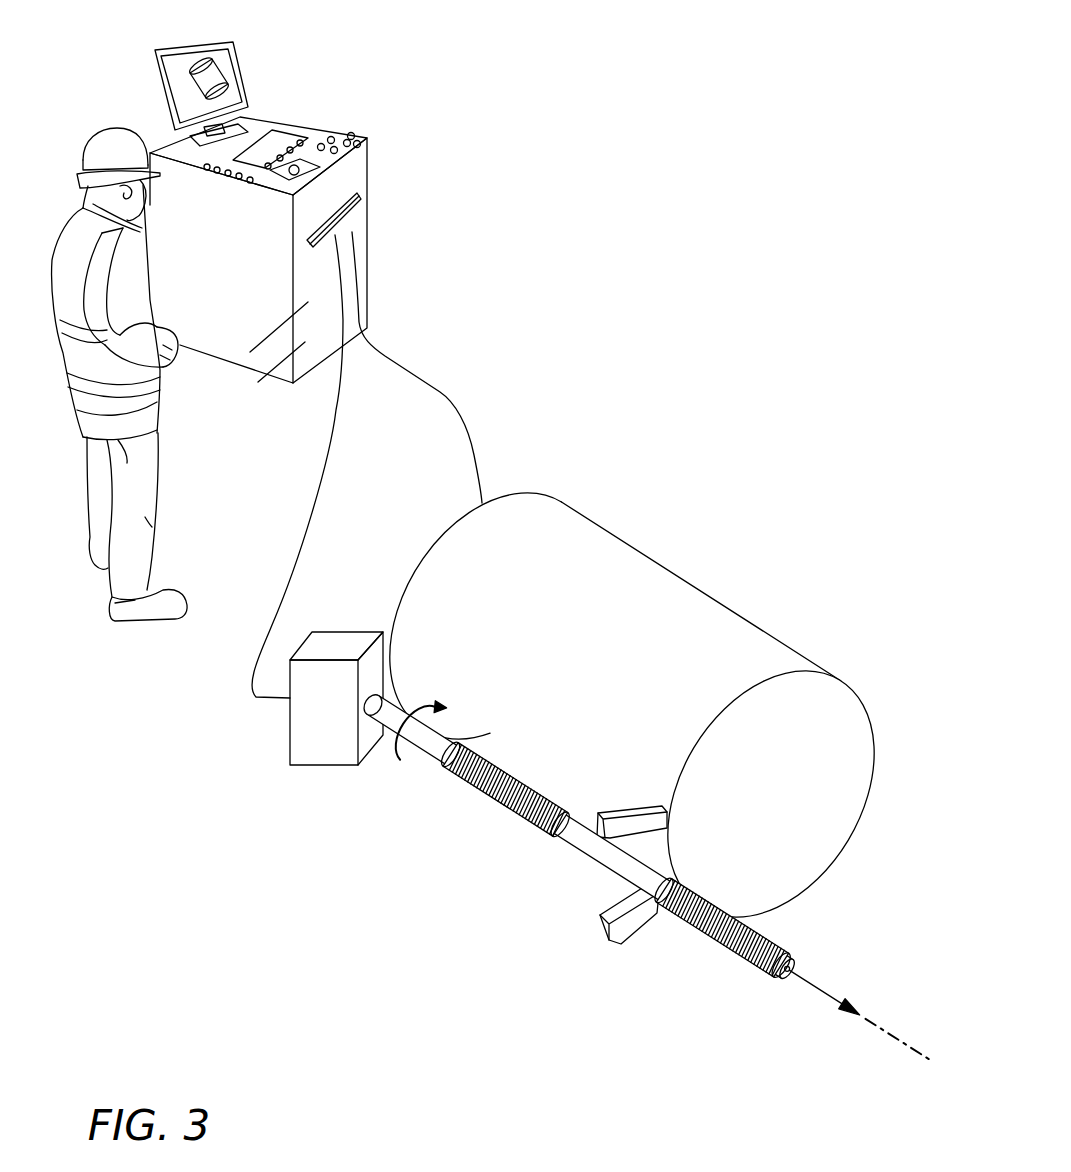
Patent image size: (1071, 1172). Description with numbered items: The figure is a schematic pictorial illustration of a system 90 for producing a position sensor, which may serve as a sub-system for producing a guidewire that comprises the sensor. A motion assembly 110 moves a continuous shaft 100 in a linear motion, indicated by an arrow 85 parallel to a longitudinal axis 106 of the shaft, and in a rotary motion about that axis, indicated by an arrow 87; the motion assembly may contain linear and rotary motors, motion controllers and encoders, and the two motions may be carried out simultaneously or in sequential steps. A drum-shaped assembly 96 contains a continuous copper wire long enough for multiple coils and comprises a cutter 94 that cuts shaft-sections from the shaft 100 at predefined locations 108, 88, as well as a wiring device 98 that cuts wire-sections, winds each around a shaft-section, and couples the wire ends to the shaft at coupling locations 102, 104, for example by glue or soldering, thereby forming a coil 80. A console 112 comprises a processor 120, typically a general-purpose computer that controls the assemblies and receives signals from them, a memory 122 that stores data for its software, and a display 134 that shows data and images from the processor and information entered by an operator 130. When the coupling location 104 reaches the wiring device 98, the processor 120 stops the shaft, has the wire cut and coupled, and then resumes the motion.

The system 90 is at (858, 136).
The console 112 is at (126, 70).
The processor 120 is at (373, 257).
The memory 122 is at (372, 322).
The operator 130 is at (88, 137).
The display 134 is at (247, 68).
The motion assembly 110 is at (342, 633).
The drum-shaped assembly 96 is at (806, 660).
The wiring device 98 is at (490, 728).
The cutter 94 is at (637, 808).
The continuous shaft 100 is at (380, 793).
The coil 80 is at (512, 800).
The predefined location 88 is at (615, 868).
The coupling location 104 is at (447, 767).
The coupling location 102 is at (550, 837).
The predefined location 108 is at (810, 960).
The arrow 85 is at (828, 993).
The longitudinal axis 106 is at (888, 1032).
The arrow 87 is at (437, 703).